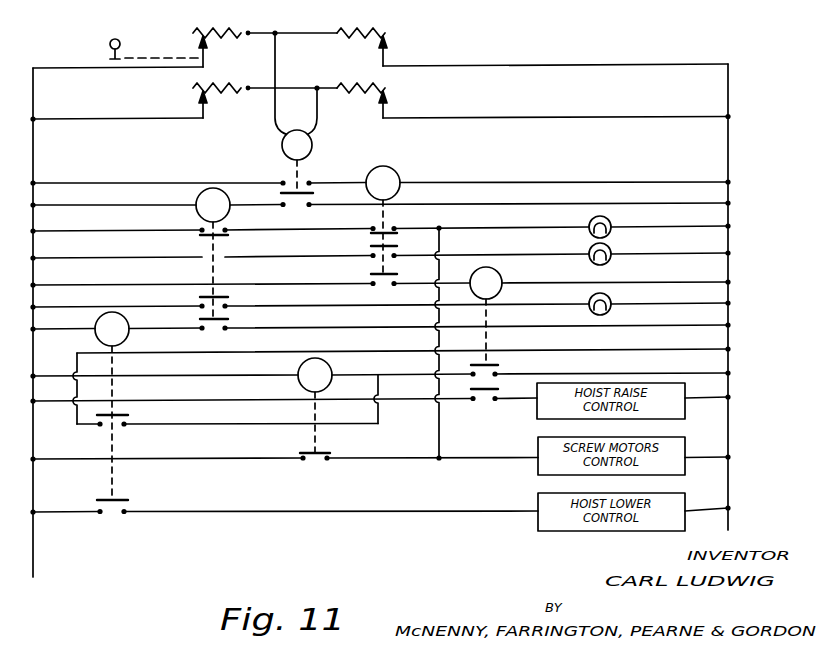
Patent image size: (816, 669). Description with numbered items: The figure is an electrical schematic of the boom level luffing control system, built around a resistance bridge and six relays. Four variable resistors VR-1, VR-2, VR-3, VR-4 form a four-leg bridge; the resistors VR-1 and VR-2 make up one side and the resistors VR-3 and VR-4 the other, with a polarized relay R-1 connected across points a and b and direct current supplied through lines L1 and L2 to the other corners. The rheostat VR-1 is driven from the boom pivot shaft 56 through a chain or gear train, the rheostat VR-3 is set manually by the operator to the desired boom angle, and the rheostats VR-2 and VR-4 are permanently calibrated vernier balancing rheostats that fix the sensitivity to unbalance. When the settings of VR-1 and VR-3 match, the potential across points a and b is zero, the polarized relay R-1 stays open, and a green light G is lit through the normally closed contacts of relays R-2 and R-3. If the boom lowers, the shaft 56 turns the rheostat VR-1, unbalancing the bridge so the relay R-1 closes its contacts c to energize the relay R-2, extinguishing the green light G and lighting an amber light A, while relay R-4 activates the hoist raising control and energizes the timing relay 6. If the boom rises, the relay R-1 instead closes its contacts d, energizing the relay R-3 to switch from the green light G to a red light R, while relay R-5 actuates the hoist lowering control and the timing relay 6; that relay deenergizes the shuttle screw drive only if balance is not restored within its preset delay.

The boom pivot shaft 56 is at (110, 43).
The timing relay 6 is at (315, 409).
The variable resistor VR-1 is at (221, 39).
The variable resistor VR-2 is at (362, 39).
The variable resistor VR-3 is at (221, 92).
The variable resistor VR-4 is at (362, 92).
The polarized relay R-1 is at (296, 113).
The relay R-2 is at (383, 226).
The relay R-3 is at (213, 259).
The relay R-4 is at (486, 334).
The relay R-5 is at (112, 413).
The supply line L1 is at (33, 557).
The supply line L2 is at (728, 465).
The green light G is at (608, 221).
The amber light A is at (607, 248).
The red light R is at (607, 299).
The bridge point a is at (273, 24).
The bridge point b is at (317, 86).
The relay contacts c is at (296, 176).
The relay contacts d is at (294, 213).